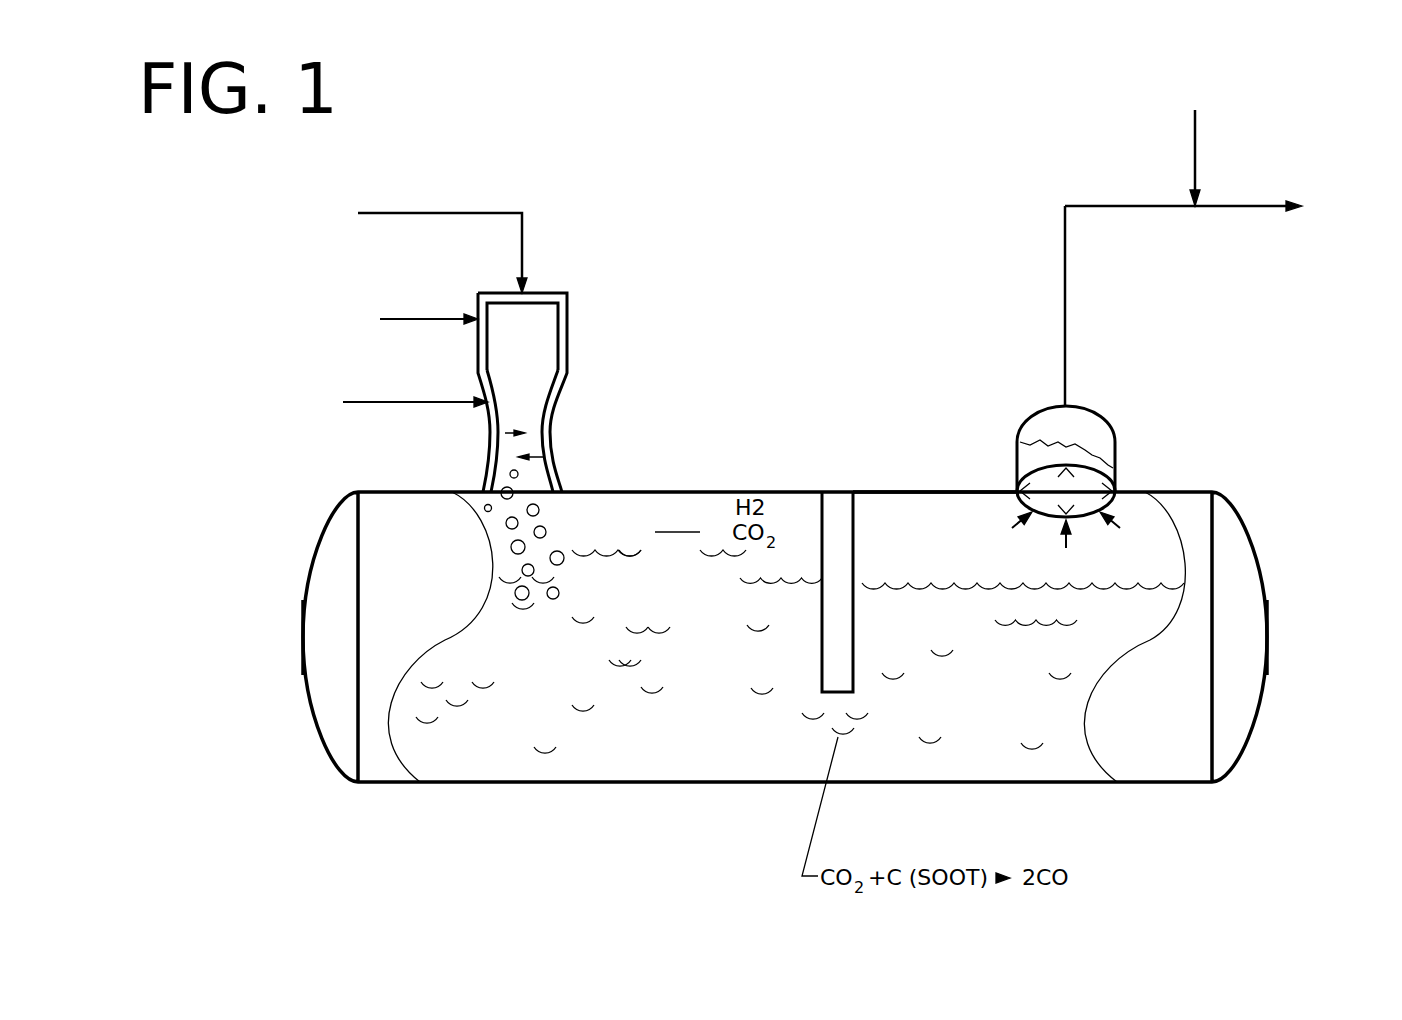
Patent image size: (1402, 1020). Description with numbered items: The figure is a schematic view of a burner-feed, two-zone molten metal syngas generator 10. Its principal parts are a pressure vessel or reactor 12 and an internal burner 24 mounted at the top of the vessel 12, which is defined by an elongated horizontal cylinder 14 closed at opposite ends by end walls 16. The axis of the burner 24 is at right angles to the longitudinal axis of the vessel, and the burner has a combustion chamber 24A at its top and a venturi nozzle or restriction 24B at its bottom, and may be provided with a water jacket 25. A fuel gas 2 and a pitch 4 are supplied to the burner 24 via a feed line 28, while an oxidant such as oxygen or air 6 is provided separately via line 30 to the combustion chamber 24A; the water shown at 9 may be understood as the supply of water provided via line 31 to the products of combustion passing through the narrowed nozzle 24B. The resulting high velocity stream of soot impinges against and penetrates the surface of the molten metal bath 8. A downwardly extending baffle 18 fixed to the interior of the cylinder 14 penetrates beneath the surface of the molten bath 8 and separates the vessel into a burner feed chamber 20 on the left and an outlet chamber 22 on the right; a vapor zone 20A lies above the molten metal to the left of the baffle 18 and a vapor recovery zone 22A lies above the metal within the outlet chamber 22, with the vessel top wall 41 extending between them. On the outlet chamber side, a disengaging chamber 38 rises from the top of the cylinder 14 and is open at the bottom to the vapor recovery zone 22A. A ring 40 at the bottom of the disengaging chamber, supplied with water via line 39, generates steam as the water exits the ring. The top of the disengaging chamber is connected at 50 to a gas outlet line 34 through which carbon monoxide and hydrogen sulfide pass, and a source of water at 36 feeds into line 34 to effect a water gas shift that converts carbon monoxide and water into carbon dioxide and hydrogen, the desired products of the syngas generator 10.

The fuel gas 2 is at (172, 230).
The pitch 4 is at (312, 230).
The oxidant 6 is at (400, 320).
The molten bath 8 is at (790, 663).
The steam stream 9 is at (363, 402).
The molten metal syngas generator 10 is at (557, 262).
The pressure vessel 12 is at (388, 783).
The horizontal cylinder 14 is at (1185, 492).
The end walls 16 is at (303, 638).
The baffle 18 is at (853, 512).
The burner feed chamber 20 is at (630, 722).
The vapor zone 20A is at (555, 512).
The outlet chamber 22 is at (998, 735).
The vapor recovery zone 22A is at (1023, 570).
The burner 24 is at (567, 303).
The combustion chamber 24A is at (522, 336).
The venturi nozzle 24B is at (513, 447).
The water jacket 25 is at (547, 427).
The feed line 28 is at (442, 239).
The oxidant line 30 is at (429, 306).
The water line 31 is at (415, 391).
The gas outlet line 34 is at (1152, 206).
The source of water 36 is at (1203, 144).
The disengaging chamber 38 is at (1117, 440).
The water line 39 is at (1013, 527).
The ring 40 is at (1088, 517).
The vessel top wall 41 is at (940, 490).
The connection 50 is at (1067, 405).